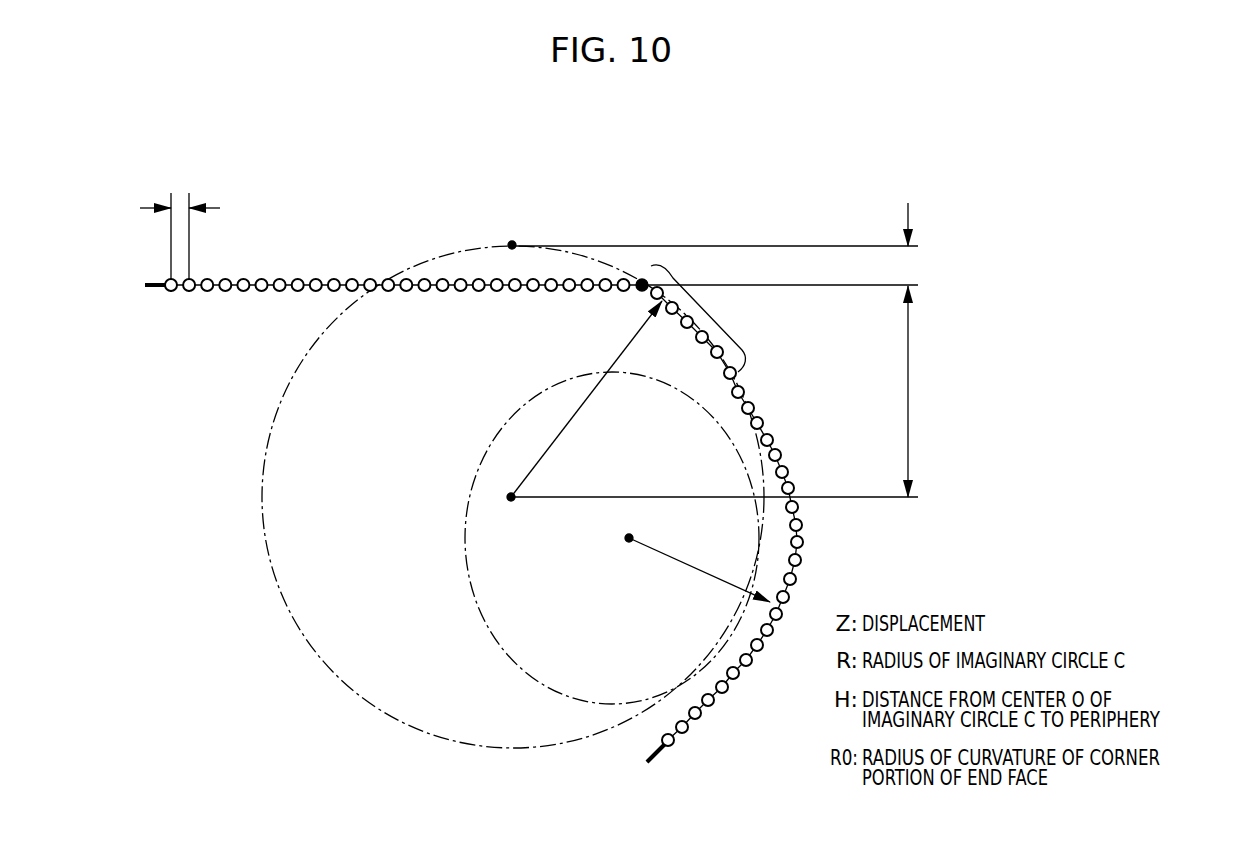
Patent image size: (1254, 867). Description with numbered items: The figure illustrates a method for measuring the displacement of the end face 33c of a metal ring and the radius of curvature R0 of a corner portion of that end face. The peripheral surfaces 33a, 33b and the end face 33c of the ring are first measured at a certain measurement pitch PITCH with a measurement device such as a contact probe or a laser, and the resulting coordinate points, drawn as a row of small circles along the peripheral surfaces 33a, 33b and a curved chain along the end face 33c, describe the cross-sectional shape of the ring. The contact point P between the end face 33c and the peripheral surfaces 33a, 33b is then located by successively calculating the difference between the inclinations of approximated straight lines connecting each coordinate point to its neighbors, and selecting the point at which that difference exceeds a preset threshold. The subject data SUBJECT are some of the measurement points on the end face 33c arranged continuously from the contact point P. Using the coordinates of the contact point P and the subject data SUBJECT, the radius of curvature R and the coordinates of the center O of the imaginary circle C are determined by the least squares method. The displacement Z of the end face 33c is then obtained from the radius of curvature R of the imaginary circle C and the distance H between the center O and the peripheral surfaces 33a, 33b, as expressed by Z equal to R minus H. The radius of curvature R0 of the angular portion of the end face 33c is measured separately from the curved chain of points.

The peripheral surface 33a is at (268, 280).
The peripheral surface 33b is at (531, 246).
The end face 33c is at (762, 430).
The imaginary circle C is at (268, 445).
The contact point P is at (641, 280).
The radius of curvature of imaginary circle R is at (570, 420).
The center of imaginary circle O is at (511, 503).
The radius of curvature of corner portion R0 is at (665, 558).
The displacement of end face Z is at (776, 241).
The distance from center to peripheral surface H is at (726, 391).
The measurement pitch PITCH is at (178, 207).
The subject data SUBJECT is at (702, 303).